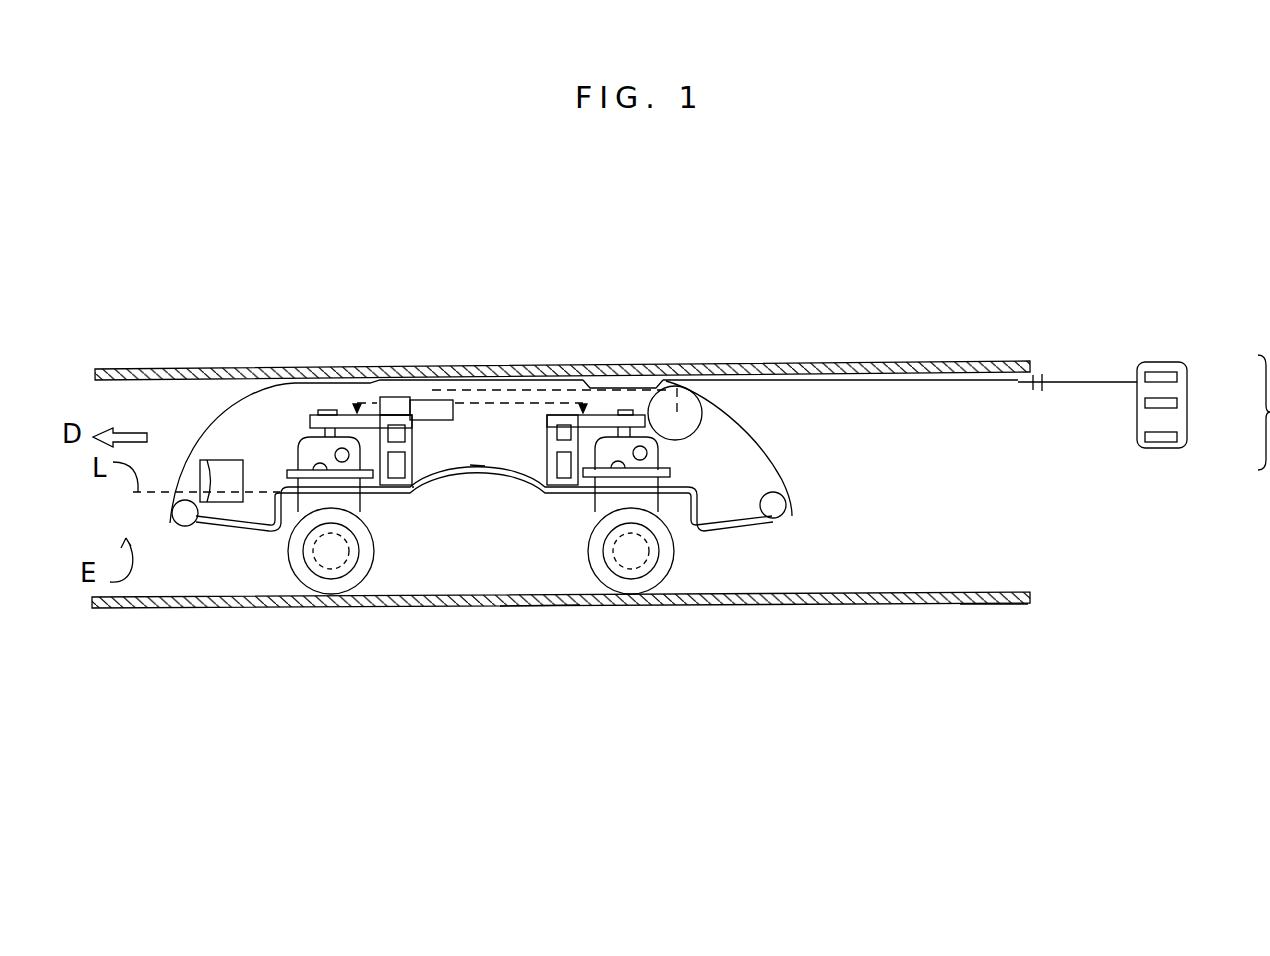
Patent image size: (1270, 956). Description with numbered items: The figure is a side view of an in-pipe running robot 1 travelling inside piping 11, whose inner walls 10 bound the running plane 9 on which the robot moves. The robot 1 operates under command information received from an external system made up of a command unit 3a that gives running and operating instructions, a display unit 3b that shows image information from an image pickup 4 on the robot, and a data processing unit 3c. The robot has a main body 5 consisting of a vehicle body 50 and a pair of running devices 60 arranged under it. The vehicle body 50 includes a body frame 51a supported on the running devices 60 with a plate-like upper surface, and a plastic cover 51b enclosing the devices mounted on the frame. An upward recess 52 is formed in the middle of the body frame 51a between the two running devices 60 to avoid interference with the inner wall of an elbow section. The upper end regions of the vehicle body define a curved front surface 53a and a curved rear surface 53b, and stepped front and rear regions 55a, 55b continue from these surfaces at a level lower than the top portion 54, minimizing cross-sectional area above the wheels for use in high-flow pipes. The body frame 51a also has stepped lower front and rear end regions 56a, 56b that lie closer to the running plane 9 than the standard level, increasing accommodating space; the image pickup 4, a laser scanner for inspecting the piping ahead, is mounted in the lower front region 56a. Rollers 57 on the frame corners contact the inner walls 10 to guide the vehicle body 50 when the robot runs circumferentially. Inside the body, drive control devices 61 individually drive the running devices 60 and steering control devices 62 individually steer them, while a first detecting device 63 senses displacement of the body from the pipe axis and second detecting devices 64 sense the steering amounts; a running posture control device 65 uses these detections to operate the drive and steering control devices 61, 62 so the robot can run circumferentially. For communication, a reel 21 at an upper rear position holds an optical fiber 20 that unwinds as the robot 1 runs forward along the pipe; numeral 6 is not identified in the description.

The in-pipe running robot 1 is at (237, 200).
The command unit 3a is at (1180, 373).
The display unit 3b is at (1180, 402).
The data processing unit 3c is at (1180, 438).
The image pickup 4 is at (213, 470).
The main body 5 is at (348, 298).
The cable 6 is at (890, 298).
The running plane 9 is at (955, 594).
The inner walls of the piping 10 is at (992, 606).
The piping 11 is at (540, 603).
The optical fiber 20 is at (1021, 379).
The reel 21 is at (687, 430).
The vehicle body 50 is at (500, 381).
The body frame 51a is at (433, 481).
The plastic cover 51b is at (594, 399).
The upward recess 52 is at (487, 478).
The curved front surface 53a is at (226, 415).
The curved rear surface 53b is at (757, 400).
The top portion 54 is at (446, 366).
The stepped front region 55a is at (293, 388).
The stepped rear region 55b is at (664, 388).
The stepped lower front end region 56a is at (205, 520).
The stepped lower rear end region 56b is at (705, 535).
The roller 57 is at (176, 511).
The running device 60 is at (337, 560).
The drive control device 61 is at (295, 485).
The steering control device 62 is at (380, 436).
The first detecting device 63 is at (399, 397).
The second detecting device 64 is at (402, 434).
The running posture control device 65 is at (455, 411).